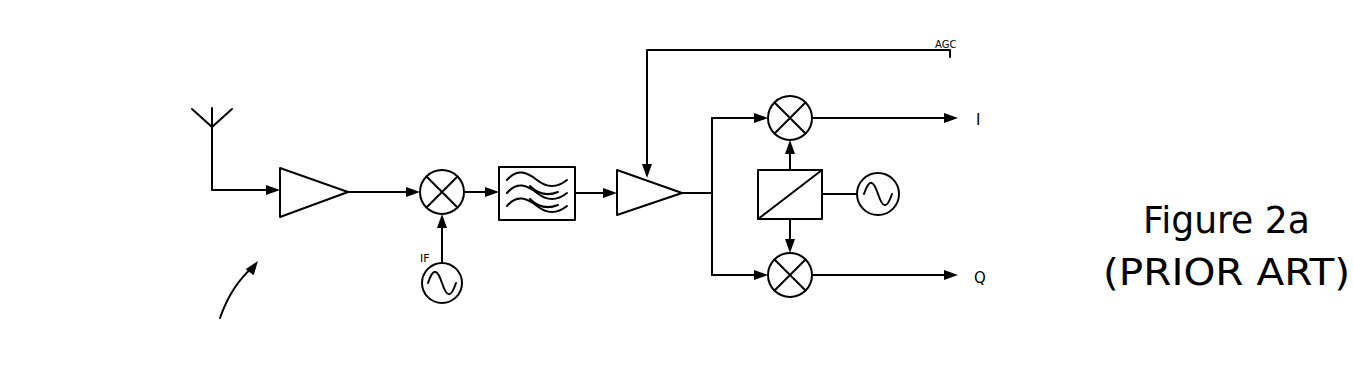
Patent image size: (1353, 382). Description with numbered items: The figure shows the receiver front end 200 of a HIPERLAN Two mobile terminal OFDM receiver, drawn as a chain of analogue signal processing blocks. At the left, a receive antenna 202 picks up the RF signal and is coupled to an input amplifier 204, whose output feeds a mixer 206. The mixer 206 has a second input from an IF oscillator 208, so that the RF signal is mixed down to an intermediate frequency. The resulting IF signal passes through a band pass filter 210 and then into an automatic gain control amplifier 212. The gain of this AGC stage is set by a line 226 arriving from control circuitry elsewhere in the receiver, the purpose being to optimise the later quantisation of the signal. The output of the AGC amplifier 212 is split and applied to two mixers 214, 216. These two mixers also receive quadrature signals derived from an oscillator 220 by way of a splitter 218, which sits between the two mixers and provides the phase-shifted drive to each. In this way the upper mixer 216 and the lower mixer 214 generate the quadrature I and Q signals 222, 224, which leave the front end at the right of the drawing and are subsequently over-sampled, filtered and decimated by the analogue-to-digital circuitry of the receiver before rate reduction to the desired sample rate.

The receiver front end 200 is at (230, 298).
The receive antenna 202 is at (196, 119).
The input amplifier 204 is at (308, 178).
The mixer 206 is at (447, 171).
The IF oscillator 208 is at (460, 268).
The band pass filter 210 is at (552, 164).
The automatic gain control amplifier 212 is at (637, 210).
The mixer 214 is at (803, 293).
The mixer 216 is at (805, 100).
The splitter 218 is at (812, 170).
The oscillator 220 is at (897, 178).
The I signal 222 is at (853, 117).
The Q signal 224 is at (858, 274).
The line 226 is at (649, 106).